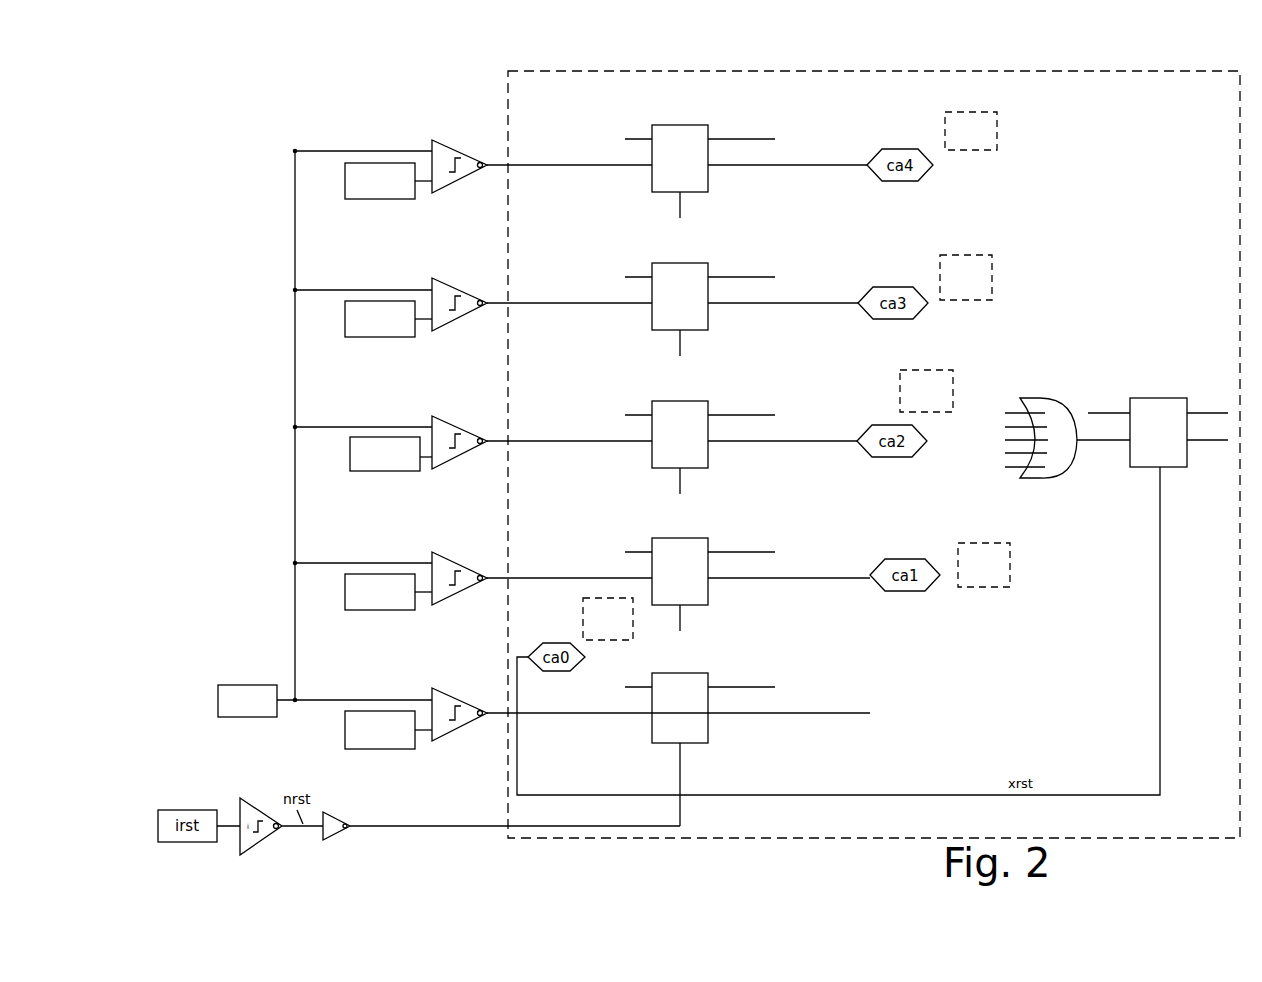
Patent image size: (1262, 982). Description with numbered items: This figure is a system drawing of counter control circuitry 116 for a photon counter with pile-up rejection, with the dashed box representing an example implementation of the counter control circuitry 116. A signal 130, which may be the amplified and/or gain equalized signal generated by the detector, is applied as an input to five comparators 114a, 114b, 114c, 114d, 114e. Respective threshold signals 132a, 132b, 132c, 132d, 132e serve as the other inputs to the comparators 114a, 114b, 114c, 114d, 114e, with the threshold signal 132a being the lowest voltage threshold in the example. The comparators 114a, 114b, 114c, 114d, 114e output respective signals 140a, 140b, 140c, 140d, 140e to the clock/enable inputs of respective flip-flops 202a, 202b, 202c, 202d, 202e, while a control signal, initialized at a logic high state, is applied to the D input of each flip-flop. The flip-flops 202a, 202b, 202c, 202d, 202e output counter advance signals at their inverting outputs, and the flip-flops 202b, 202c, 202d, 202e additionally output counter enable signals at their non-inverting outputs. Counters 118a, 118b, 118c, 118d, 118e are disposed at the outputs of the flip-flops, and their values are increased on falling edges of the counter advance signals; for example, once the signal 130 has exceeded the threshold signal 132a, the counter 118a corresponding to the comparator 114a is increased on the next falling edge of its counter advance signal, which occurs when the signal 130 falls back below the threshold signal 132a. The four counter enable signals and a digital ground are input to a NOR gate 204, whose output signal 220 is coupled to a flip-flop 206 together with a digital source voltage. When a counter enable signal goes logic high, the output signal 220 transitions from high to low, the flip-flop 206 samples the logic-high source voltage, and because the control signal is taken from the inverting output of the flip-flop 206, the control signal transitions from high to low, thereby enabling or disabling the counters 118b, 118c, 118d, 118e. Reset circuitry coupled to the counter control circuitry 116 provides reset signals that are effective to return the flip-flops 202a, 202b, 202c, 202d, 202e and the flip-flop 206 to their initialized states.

The counter control circuitry 116 is at (505, 100).
The signal 130 is at (325, 433).
The threshold signal 132a is at (388, 730).
The threshold signal 132b is at (388, 592).
The threshold signal 132c is at (391, 454).
The threshold signal 132d is at (388, 319).
The threshold signal 132e is at (388, 181).
The comparator 114a is at (472, 721).
The comparator 114b is at (472, 586).
The comparator 114c is at (472, 449).
The comparator 114d is at (472, 311).
The comparator 114e is at (472, 173).
The signal 140a is at (608, 716).
The signal 140b is at (572, 566).
The signal 140c is at (572, 429).
The signal 140d is at (572, 291).
The signal 140e is at (562, 164).
The flip-flop 202a is at (708, 741).
The flip-flop 202b is at (708, 603).
The flip-flop 202c is at (708, 466).
The flip-flop 202d is at (708, 328).
The flip-flop 202e is at (708, 190).
The counter 118a is at (590, 640).
The counter 118b is at (958, 563).
The counter 118c is at (908, 411).
The counter 118d is at (940, 281).
The counter 118e is at (947, 148).
The NOR gate 204 is at (1045, 397).
The flip-flop 206 is at (1160, 397).
The output signal 220 is at (1108, 442).